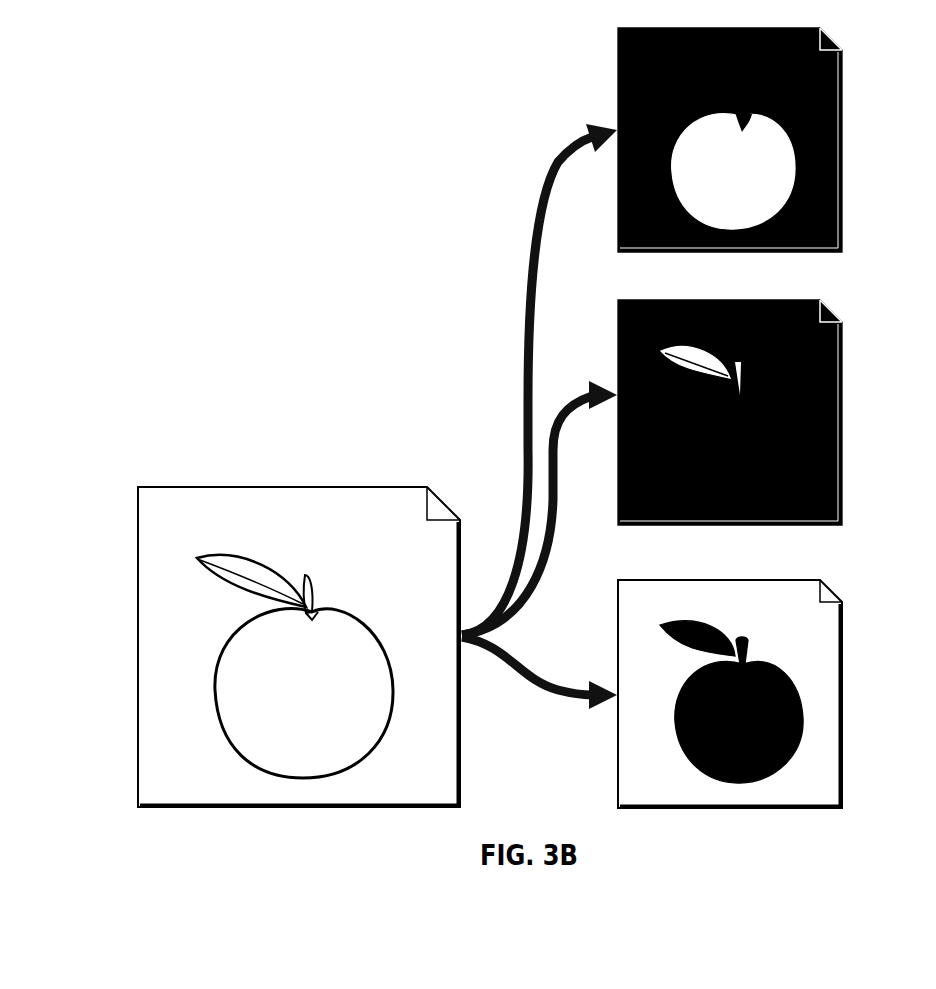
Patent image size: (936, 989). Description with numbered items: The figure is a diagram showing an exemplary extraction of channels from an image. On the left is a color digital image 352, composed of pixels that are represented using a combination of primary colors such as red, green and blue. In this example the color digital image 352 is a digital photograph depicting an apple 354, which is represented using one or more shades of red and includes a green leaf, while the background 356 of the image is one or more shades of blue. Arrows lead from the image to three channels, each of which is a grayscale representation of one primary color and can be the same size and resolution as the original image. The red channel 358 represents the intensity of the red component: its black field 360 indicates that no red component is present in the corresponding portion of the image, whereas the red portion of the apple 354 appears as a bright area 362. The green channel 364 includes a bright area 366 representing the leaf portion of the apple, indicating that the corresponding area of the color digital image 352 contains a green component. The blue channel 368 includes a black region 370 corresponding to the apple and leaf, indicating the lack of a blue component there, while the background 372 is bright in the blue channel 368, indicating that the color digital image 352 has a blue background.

The color digital image 352 is at (286, 487).
The apple 354 is at (216, 648).
The background 356 is at (176, 740).
The red channel 358 is at (843, 120).
The black field 360 is at (658, 73).
The bright area 362 is at (672, 135).
The green channel 364 is at (843, 383).
The bright area 366 is at (660, 354).
The blue channel 368 is at (843, 665).
The black region 370 is at (803, 722).
The background 372 is at (800, 778).